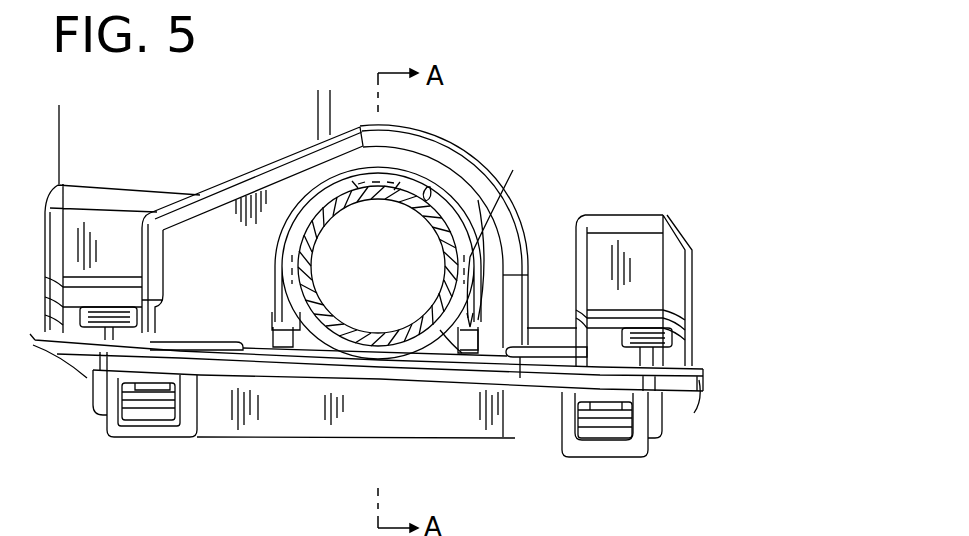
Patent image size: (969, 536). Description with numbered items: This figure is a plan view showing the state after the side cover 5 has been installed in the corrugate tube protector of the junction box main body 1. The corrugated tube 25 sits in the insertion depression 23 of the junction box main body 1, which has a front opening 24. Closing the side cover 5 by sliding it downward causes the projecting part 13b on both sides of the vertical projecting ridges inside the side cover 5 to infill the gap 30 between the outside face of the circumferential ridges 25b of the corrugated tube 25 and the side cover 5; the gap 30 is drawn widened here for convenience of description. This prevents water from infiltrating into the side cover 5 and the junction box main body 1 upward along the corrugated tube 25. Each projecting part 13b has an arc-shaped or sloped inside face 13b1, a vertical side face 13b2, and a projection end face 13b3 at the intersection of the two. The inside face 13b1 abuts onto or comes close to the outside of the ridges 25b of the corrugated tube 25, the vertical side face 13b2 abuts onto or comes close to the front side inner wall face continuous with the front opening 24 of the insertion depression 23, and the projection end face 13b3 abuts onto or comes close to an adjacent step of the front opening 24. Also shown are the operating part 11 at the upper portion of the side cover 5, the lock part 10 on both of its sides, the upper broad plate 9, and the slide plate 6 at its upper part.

The junction box main body 1 is at (681, 422).
The side cover 5 is at (495, 450).
The slide plate 6 is at (520, 367).
The upper broad plate 9 is at (542, 380).
The lock part 10 is at (158, 432).
The operating part 11 is at (317, 420).
The projecting part 13b is at (292, 340).
The inside face 13b1 is at (430, 335).
The side face 13b2 is at (507, 280).
The projection end face 13b3 is at (483, 257).
The insertion depression 23 is at (428, 192).
The front opening 24 is at (292, 298).
The corrugated tube 25 is at (447, 238).
The ridges 25b is at (387, 360).
The gap 30 is at (459, 332).